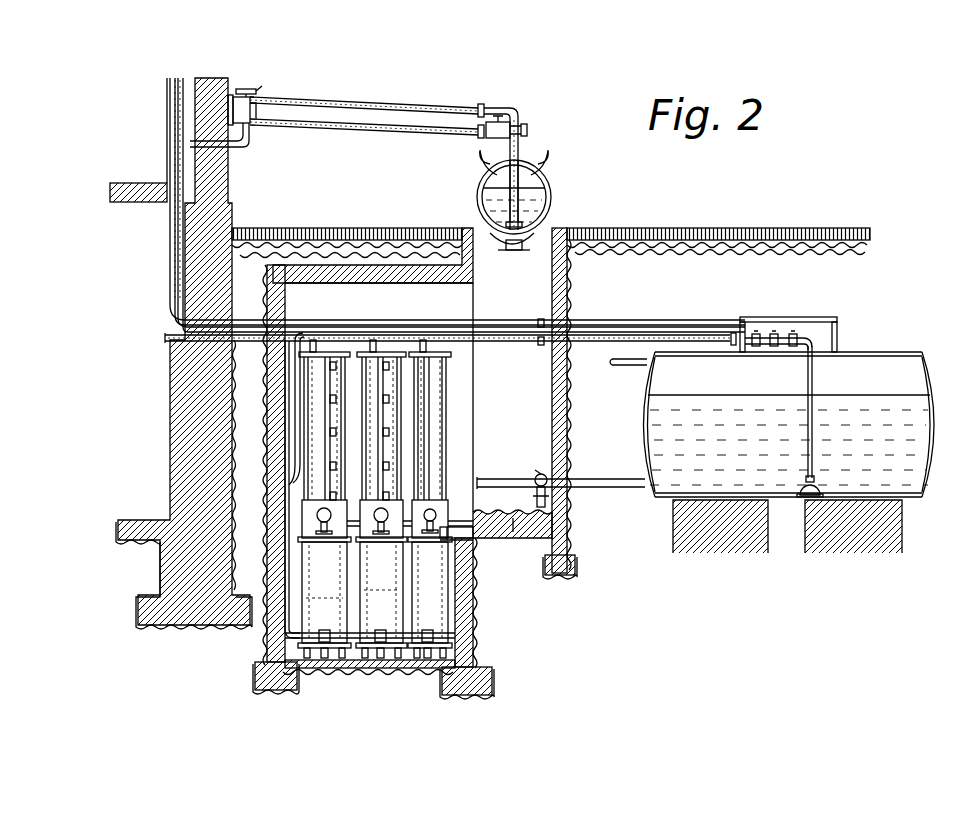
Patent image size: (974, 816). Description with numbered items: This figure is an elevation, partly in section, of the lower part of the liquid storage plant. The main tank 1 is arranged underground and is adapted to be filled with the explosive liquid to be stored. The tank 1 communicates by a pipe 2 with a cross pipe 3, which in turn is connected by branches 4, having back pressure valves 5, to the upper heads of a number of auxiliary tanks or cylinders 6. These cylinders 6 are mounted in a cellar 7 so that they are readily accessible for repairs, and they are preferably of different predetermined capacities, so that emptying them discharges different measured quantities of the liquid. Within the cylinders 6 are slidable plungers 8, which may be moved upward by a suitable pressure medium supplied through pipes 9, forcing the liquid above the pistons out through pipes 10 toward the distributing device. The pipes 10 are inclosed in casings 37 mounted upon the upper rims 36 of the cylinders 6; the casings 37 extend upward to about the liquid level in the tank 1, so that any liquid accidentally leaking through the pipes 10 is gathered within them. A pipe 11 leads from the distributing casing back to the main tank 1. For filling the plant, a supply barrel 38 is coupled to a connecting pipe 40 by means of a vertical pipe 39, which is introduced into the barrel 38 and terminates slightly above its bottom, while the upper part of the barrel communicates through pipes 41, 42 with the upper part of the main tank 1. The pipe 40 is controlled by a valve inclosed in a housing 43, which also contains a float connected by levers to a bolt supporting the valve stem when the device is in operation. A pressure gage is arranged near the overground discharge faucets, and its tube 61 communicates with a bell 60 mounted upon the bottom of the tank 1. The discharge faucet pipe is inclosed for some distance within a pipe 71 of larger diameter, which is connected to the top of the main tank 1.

The main tank 1 is at (908, 386).
The pipe 2 is at (594, 483).
The cross pipe 3 is at (535, 483).
The branches 4 is at (452, 525).
The back pressure valves 5 is at (515, 538).
The auxiliary tanks or cylinders 6 is at (338, 573).
The cellar 7 is at (456, 452).
The slidable plungers 8 is at (270, 636).
The pipes 9 is at (300, 364).
The pipes 10 is at (286, 404).
The pipe 11 is at (172, 237).
The upper rims 36 is at (400, 503).
The casings 37 is at (433, 422).
The supply barrel 38 is at (549, 190).
The vertical pipe 39 is at (510, 205).
The connecting pipe 40 is at (361, 105).
The pipe 41 is at (395, 127).
The pipe 42 is at (392, 328).
The housing 43 is at (247, 107).
The bell 60 is at (818, 490).
The tube 61 is at (806, 426).
The pipe 71 is at (632, 364).